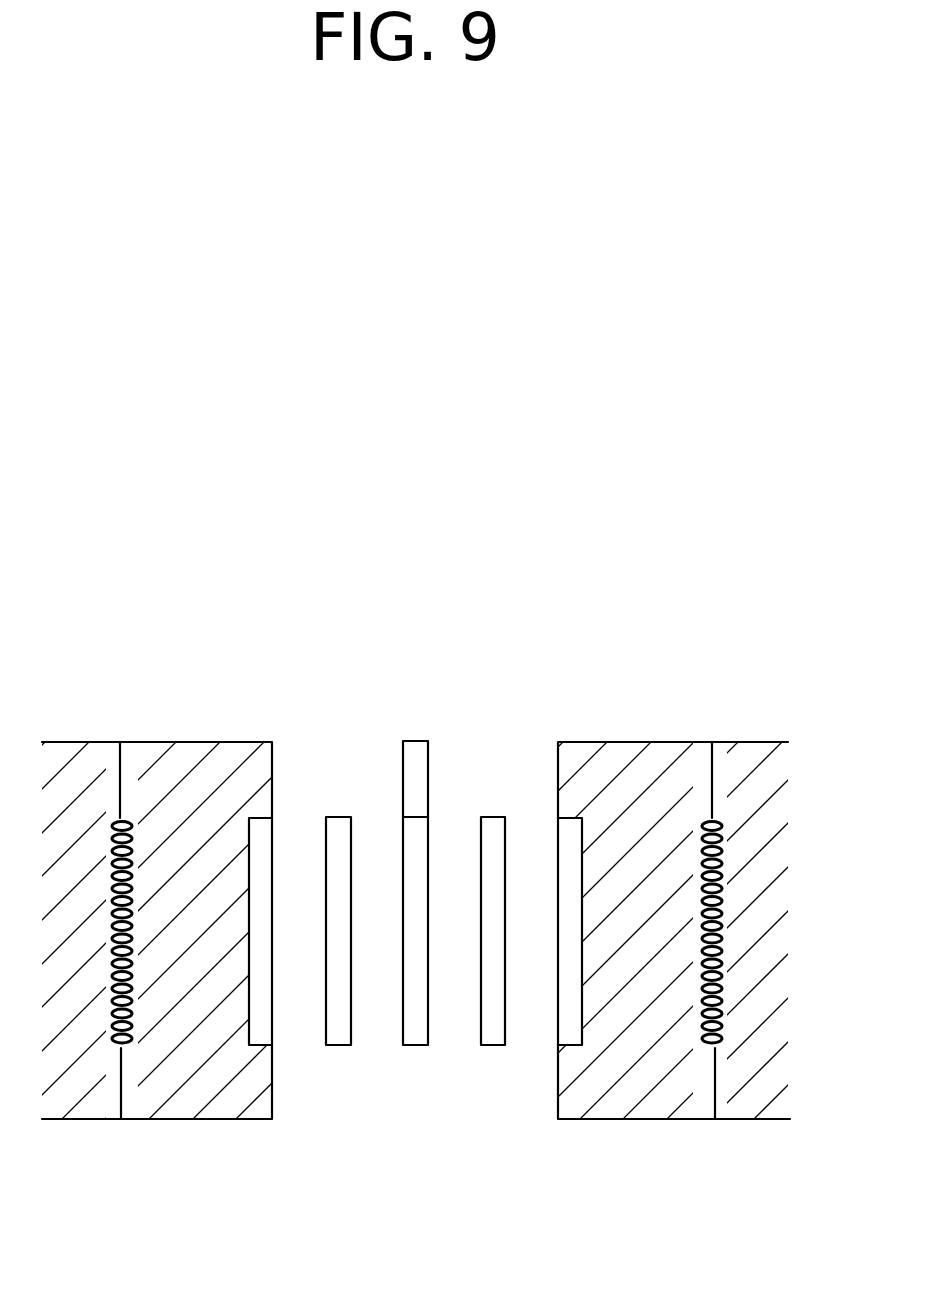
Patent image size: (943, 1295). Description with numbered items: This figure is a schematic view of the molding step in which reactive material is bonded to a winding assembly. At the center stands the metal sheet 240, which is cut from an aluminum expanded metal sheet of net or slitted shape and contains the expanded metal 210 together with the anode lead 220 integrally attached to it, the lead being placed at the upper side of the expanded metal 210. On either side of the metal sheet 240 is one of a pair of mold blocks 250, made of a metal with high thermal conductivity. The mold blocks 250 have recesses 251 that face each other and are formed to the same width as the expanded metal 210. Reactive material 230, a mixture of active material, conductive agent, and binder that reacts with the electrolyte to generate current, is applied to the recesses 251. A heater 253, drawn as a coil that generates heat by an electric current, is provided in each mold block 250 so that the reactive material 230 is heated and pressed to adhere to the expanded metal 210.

The expanded metal 210 is at (428, 862).
The anode lead 220 is at (403, 770).
The reactive material 230 is at (338, 1047).
The metal sheet 240 is at (415, 812).
The mold blocks 250 is at (215, 762).
The recesses 251 is at (265, 1015).
The heater 253 is at (130, 1048).